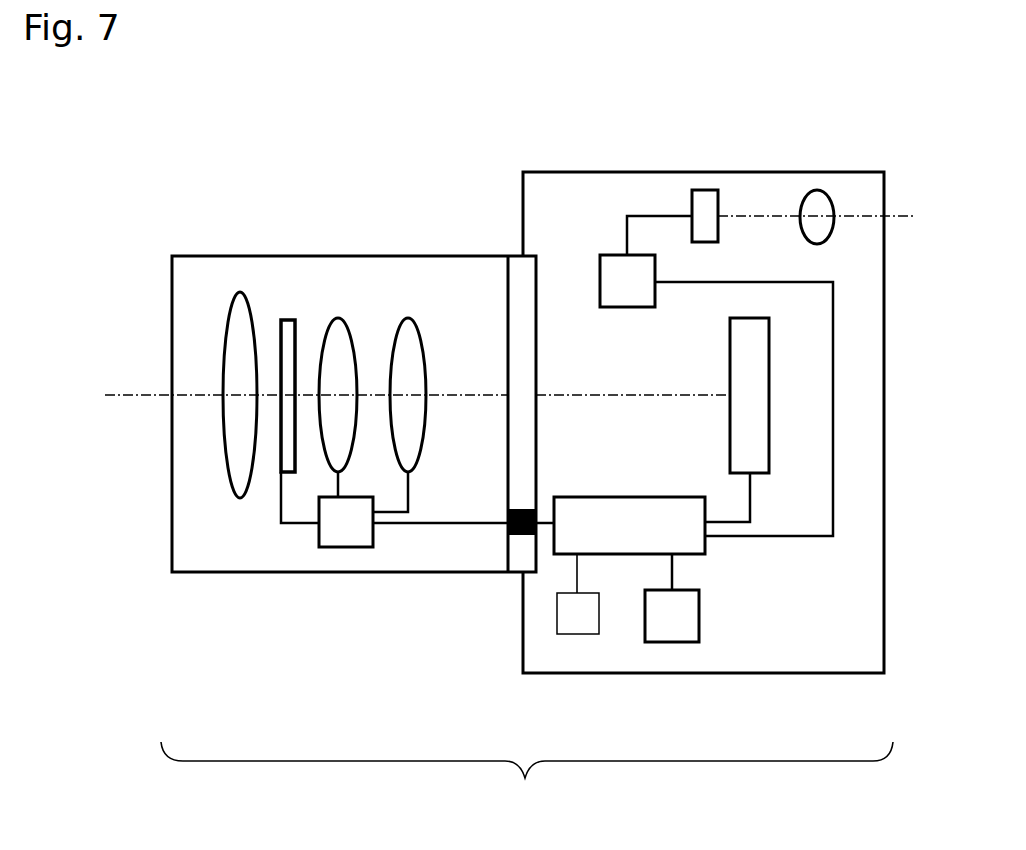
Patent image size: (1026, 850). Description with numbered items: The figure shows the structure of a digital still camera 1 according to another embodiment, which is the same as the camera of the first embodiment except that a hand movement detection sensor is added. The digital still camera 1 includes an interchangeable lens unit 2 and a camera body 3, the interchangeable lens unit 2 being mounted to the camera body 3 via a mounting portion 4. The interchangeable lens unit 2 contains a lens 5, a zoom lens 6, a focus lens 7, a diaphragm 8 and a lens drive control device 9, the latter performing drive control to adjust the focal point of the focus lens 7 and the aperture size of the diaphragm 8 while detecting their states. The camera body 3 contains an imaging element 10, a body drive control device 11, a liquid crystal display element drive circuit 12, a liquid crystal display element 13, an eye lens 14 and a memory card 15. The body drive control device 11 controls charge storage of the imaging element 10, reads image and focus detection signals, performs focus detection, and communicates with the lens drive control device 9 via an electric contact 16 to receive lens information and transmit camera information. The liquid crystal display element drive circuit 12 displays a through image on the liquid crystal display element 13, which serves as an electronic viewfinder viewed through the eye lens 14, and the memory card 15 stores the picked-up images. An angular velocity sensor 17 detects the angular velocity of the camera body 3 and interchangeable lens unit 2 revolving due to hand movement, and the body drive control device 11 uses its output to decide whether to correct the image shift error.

The digital still camera 1 is at (527, 778).
The interchangeable lens unit 2 is at (430, 555).
The camera body 3 is at (790, 662).
The mounting portion 4 is at (522, 268).
The lens 5 is at (242, 305).
The zoom lens 6 is at (340, 335).
The focus lens 7 is at (410, 335).
The diaphragm 8 is at (288, 325).
The lens drive control device 9 is at (333, 538).
The imaging element 10 is at (745, 373).
The body drive control device 11 is at (625, 503).
The liquid crystal display element drive circuit 12 is at (613, 270).
The liquid crystal display element 13 is at (704, 201).
The eye lens 14 is at (815, 200).
The memory card 15 is at (693, 618).
The electric contact 16 is at (520, 511).
The angular velocity sensor 17 is at (573, 633).